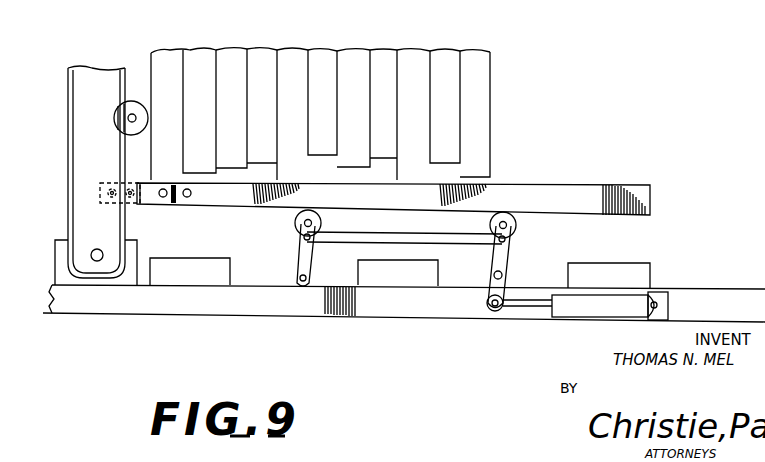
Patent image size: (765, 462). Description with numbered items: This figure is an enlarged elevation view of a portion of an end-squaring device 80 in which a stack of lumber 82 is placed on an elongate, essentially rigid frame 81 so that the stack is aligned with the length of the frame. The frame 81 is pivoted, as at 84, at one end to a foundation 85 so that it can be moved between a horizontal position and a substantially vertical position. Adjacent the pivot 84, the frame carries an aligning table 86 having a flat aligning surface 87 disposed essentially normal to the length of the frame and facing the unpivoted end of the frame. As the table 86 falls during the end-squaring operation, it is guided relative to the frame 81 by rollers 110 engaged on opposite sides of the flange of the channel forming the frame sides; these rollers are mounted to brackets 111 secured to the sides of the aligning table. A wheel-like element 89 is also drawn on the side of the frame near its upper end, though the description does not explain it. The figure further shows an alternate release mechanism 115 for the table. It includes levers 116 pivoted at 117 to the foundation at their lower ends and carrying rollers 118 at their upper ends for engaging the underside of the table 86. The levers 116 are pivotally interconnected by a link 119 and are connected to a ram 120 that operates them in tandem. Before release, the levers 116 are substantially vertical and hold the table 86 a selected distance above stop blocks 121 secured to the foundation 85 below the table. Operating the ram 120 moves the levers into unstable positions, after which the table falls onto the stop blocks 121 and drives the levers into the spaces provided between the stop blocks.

The end-squaring device 80 is at (537, 122).
The frame 81 is at (92, 68).
The guide roller on post 89 is at (128, 100).
The stack of lumber 82 is at (445, 55).
The aligning table 86 is at (650, 203).
The aligning surface 87 is at (593, 185).
The rollers 110 is at (130, 182).
The brackets 111 is at (146, 206).
The pivot 84 is at (99, 261).
The foundation 85 is at (228, 303).
The stop blocks 121 is at (210, 272).
The rollers 118 is at (296, 219).
The pivot 117 is at (302, 286).
The levers 116 is at (510, 262).
The link 119 is at (413, 237).
The release mechanism 115 is at (643, 242).
The ram 120 is at (668, 303).